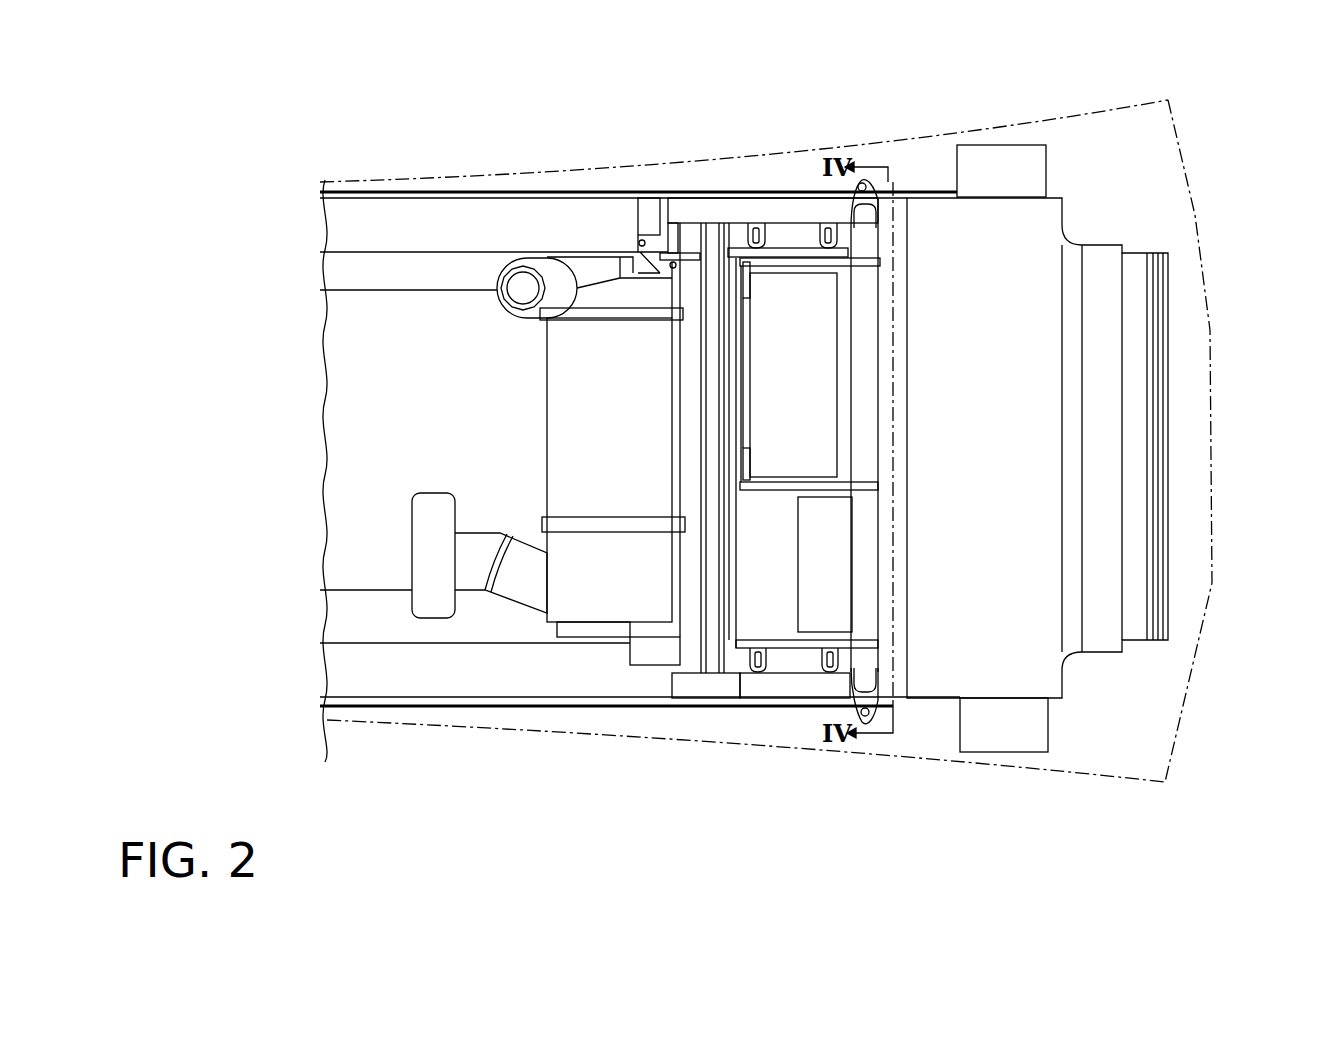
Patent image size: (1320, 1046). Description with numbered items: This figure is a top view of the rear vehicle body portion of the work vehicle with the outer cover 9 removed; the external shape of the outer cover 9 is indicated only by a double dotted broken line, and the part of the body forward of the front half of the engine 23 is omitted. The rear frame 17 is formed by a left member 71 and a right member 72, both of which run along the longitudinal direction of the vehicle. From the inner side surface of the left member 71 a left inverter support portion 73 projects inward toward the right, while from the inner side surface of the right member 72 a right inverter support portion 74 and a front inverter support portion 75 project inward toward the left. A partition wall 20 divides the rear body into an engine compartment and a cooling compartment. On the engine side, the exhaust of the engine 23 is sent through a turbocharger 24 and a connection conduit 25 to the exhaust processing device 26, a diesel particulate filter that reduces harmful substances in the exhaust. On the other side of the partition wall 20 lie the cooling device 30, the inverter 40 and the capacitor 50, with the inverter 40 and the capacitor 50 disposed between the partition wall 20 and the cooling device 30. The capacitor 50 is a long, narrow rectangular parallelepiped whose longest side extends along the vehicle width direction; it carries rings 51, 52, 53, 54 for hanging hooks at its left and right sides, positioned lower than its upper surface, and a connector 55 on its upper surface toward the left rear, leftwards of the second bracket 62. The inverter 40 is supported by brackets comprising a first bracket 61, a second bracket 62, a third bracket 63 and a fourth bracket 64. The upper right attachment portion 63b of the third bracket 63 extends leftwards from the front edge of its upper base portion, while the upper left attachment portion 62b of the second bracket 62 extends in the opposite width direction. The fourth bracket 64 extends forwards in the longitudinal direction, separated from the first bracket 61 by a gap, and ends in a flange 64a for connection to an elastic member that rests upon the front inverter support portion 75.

The outer cover 9 is at (1192, 214).
The rear frame 17 is at (528, 188).
The partition wall 20 is at (685, 673).
The engine 23 is at (361, 326).
The turbocharger 24 is at (427, 550).
The connection conduit 25 is at (477, 547).
The exhaust processing device 26 is at (563, 403).
The cooling device 30 is at (1030, 302).
The inverter 40 is at (822, 333).
The capacitor 50 is at (787, 660).
The ring 51 is at (758, 653).
The ring 52 is at (808, 690).
The ring 53 is at (755, 226).
The ring 54 is at (833, 226).
The connector 55 is at (830, 598).
The first bracket 61 is at (865, 567).
The second bracket 62 is at (878, 486).
The upper left attachment portion 62b is at (745, 468).
The third bracket 63 is at (868, 262).
The upper right attachment portion 63b is at (748, 287).
The fourth bracket 64 is at (692, 252).
The flange 64a is at (660, 241).
The left member 71 is at (480, 702).
The right member 72 is at (600, 191).
The left inverter support portion 73 is at (680, 687).
The right inverter support portion 74 is at (778, 210).
The front inverter support portion 75 is at (648, 206).